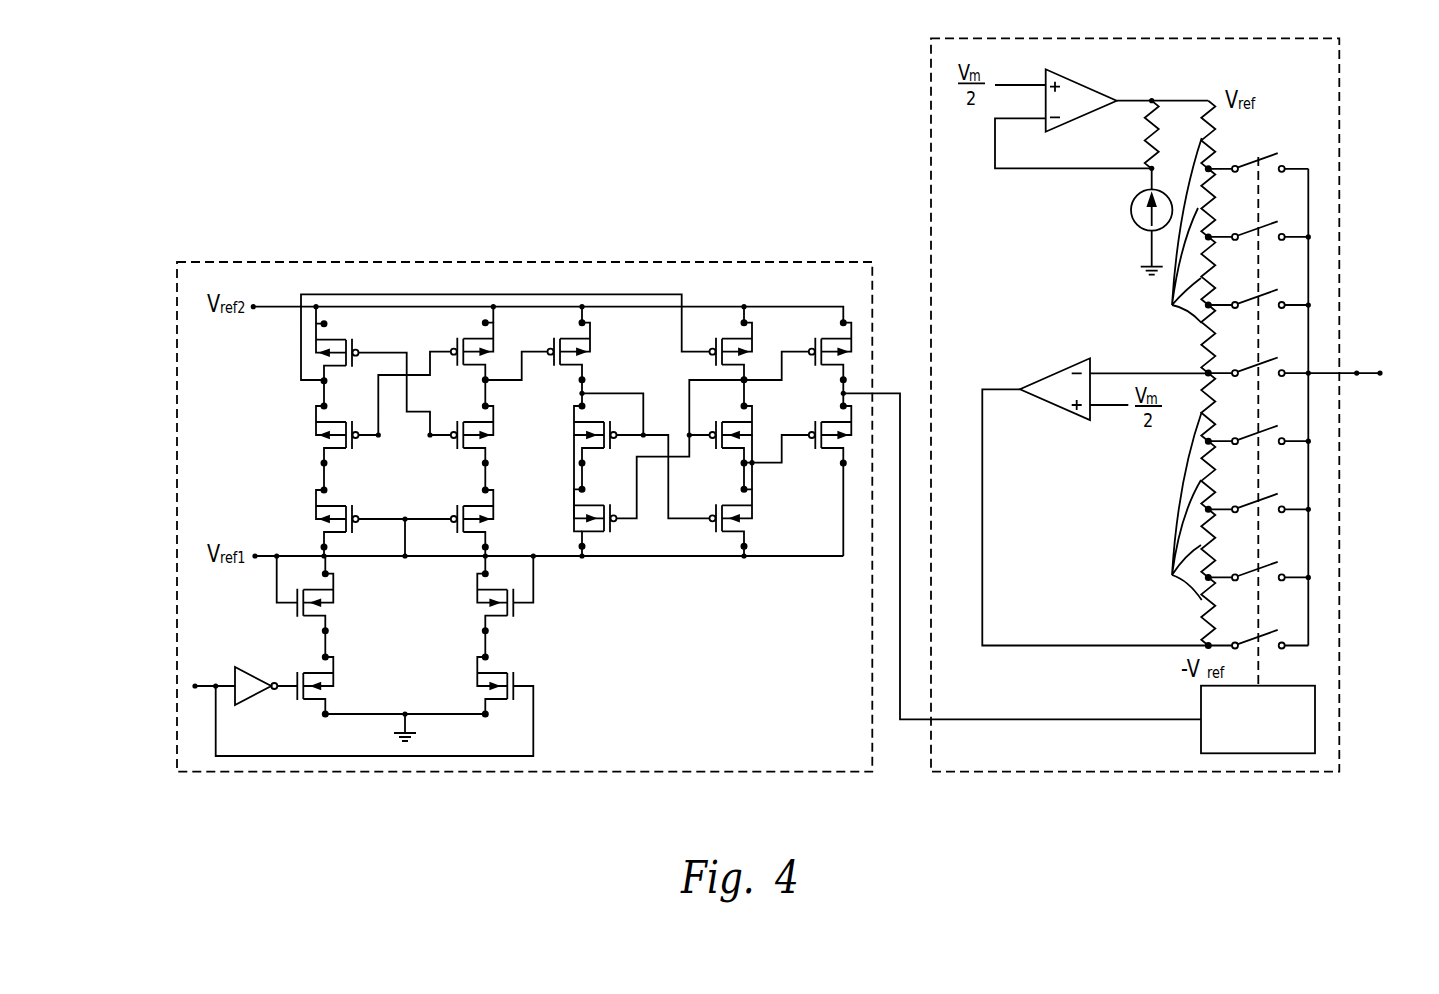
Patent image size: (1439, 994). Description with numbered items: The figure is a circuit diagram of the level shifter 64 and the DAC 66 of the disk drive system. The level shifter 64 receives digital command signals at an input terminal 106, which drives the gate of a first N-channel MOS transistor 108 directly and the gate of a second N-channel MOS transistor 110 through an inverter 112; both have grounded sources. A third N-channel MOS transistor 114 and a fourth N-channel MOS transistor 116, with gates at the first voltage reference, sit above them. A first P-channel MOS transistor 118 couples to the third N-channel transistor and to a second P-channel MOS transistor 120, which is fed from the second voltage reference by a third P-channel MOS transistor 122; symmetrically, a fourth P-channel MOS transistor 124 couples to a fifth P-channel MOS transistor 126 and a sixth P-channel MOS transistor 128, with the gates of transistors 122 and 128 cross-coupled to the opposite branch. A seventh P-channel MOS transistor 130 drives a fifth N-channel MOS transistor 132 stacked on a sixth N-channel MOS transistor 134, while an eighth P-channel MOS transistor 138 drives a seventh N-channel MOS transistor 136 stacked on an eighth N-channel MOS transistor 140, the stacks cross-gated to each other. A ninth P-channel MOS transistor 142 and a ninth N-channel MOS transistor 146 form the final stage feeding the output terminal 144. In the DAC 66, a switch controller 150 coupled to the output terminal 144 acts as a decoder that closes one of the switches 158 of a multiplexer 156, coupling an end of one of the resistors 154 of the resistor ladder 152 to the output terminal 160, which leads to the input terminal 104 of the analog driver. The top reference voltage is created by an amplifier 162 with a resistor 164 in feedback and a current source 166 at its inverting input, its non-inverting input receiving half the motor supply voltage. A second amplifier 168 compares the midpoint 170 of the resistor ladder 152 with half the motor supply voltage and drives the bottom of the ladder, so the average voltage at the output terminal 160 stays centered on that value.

The level shifter 64 is at (177, 304).
The DAC 66 is at (1341, 78).
The input terminal 104 is at (1380, 375).
The input terminal 106 is at (196, 684).
The first N-channel MOS transistor 108 is at (475, 670).
The second N-channel MOS transistor 110 is at (335, 670).
The inverter 112 is at (252, 672).
The third N-channel MOS transistor 114 is at (475, 588).
The fourth N-channel MOS transistor 116 is at (335, 588).
The first P-channel MOS transistor 118 is at (493, 505).
The second P-channel MOS transistor 120 is at (493, 423).
The third P-channel MOS transistor 122 is at (493, 339).
The fourth P-channel MOS transistor 124 is at (315, 505).
The fifth P-channel MOS transistor 126 is at (315, 423).
The sixth P-channel MOS transistor 128 is at (350, 342).
The seventh P-channel MOS transistor 130 is at (592, 339).
The fifth N-channel MOS transistor 132 is at (618, 450).
The sixth N-channel MOS transistor 134 is at (617, 531).
The seventh N-channel MOS transistor 136 is at (716, 427).
The eighth P-channel MOS transistor 138 is at (750, 340).
The eighth N-channel MOS transistor 140 is at (716, 510).
The ninth P-channel MOS transistor 142 is at (808, 360).
The output terminal 144 is at (843, 393).
The ninth N-channel MOS transistor 146 is at (811, 443).
The switch controller 150 is at (1201, 733).
The resistor ladder 152 is at (1208, 80).
The resistors 154 is at (1172, 575).
The multiplexer 156 is at (1258, 138).
The switches 158 is at (1265, 637).
The output terminal 160 is at (1357, 373).
The amplifier 162 is at (1077, 87).
The resistor 164 is at (1145, 120).
The current source 166 is at (1138, 207).
The second amplifier 168 is at (1058, 400).
The midpoint 170 is at (1206, 371).